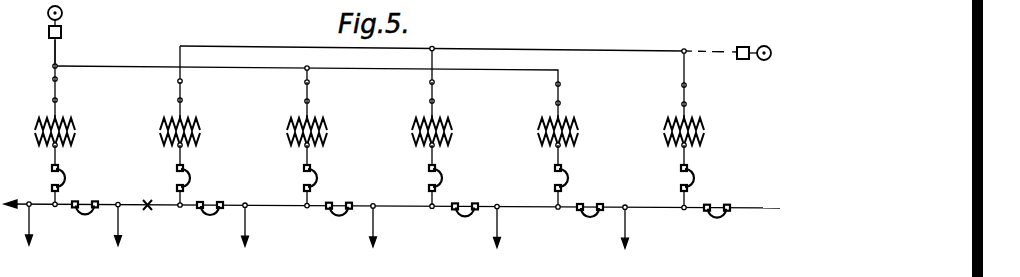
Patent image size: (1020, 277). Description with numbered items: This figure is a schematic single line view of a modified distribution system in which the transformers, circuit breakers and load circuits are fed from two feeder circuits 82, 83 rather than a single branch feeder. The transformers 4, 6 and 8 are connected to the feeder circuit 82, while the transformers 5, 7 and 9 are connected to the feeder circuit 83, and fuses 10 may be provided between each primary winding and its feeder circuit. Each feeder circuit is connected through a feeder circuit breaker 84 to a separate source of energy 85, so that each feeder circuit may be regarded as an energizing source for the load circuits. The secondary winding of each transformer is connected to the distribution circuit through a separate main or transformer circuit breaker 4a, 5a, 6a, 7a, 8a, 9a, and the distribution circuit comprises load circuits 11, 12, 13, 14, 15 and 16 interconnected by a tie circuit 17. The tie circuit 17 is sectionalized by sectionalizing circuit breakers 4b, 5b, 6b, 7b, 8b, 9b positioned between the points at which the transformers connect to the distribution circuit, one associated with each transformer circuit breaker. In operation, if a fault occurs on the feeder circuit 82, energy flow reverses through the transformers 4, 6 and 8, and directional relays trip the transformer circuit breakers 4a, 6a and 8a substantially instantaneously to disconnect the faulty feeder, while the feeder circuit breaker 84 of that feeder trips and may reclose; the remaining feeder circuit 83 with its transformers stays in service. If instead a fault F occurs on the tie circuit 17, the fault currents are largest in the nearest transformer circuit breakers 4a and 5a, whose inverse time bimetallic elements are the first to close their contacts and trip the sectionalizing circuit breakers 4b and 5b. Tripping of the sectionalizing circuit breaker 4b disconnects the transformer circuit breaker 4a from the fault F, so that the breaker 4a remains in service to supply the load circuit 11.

The transformer 4 is at (76, 142).
The transformer 5 is at (201, 142).
The transformer 6 is at (328, 142).
The transformer 7 is at (453, 142).
The transformer 8 is at (579, 142).
The transformer 9 is at (705, 142).
The transformer circuit breaker 4a is at (66, 179).
The transformer circuit breaker 5a is at (191, 179).
The transformer circuit breaker 6a is at (318, 179).
The transformer circuit breaker 7a is at (443, 179).
The transformer circuit breaker 8a is at (569, 179).
The transformer circuit breaker 9a is at (695, 179).
The sectionalizing circuit breaker 4b is at (88, 217).
The sectionalizing circuit breaker 5b is at (213, 218).
The sectionalizing circuit breaker 6b is at (341, 218).
The sectionalizing circuit breaker 7b is at (468, 219).
The sectionalizing circuit breaker 8b is at (593, 220).
The sectionalizing circuit breaker 9b is at (709, 220).
The fuse 10 is at (178, 90).
The load circuit 11 is at (26, 250).
The load circuit 12 is at (114, 250).
The load circuit 13 is at (241, 250).
The load circuit 14 is at (367, 250).
The load circuit 15 is at (494, 250).
The load circuit 16 is at (620, 250).
The tie circuit 17 is at (648, 210).
The feeder circuit 82 is at (57, 52).
The feeder circuit 83 is at (732, 48).
The feeder circuit breaker 84 is at (62, 32).
The source of energy 85 is at (62, 13).
The fault F is at (150, 199).